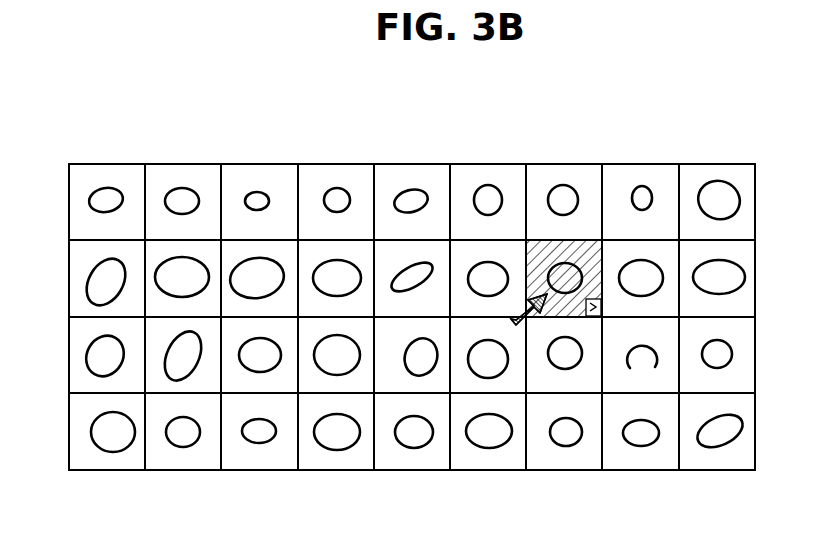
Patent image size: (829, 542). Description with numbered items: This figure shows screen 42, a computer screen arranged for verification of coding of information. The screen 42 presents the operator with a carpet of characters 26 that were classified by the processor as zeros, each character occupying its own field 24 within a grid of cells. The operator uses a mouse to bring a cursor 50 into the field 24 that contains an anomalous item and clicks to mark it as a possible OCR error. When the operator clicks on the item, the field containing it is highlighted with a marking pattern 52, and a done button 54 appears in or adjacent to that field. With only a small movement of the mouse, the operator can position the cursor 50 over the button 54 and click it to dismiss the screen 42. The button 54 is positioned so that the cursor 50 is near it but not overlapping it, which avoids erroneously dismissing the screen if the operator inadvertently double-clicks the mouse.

The screen 42 is at (96, 93).
The field 24 is at (408, 164).
The carpet of characters 26 is at (494, 186).
The marking pattern 52 is at (548, 292).
The done button 54 is at (601, 308).
The cursor 50 is at (519, 327).